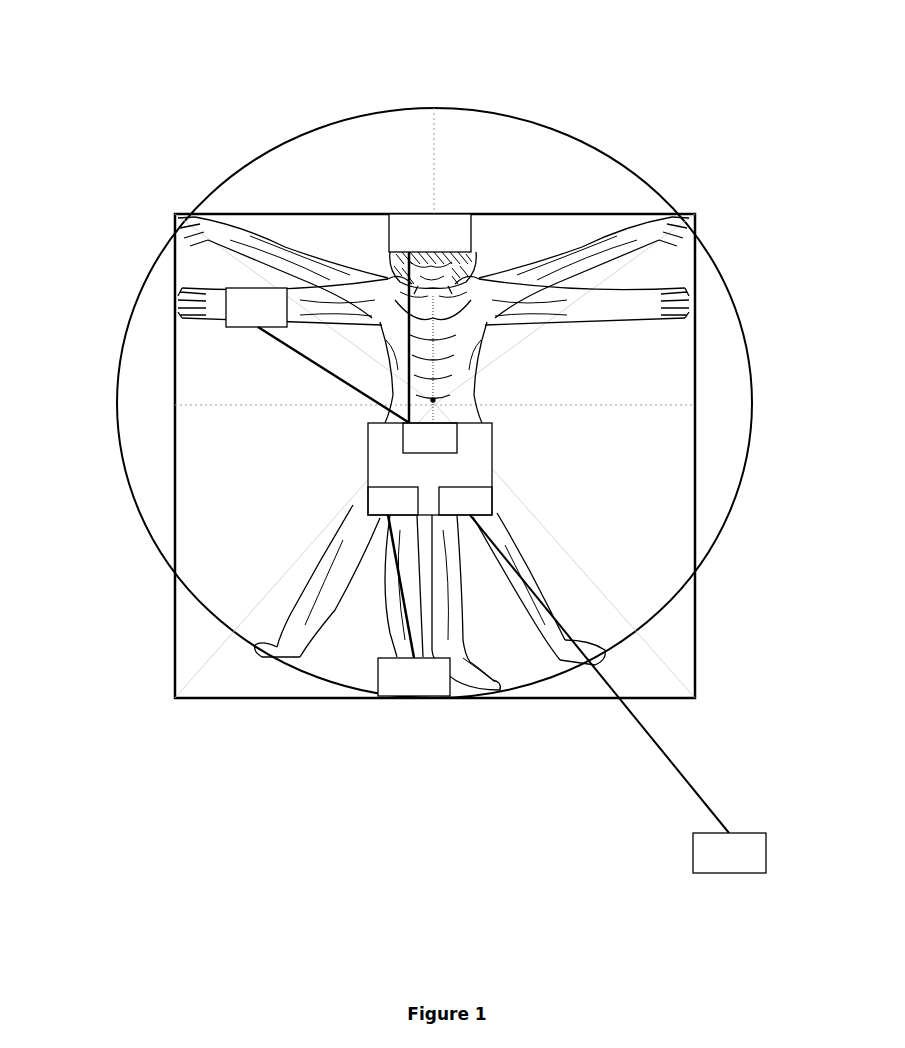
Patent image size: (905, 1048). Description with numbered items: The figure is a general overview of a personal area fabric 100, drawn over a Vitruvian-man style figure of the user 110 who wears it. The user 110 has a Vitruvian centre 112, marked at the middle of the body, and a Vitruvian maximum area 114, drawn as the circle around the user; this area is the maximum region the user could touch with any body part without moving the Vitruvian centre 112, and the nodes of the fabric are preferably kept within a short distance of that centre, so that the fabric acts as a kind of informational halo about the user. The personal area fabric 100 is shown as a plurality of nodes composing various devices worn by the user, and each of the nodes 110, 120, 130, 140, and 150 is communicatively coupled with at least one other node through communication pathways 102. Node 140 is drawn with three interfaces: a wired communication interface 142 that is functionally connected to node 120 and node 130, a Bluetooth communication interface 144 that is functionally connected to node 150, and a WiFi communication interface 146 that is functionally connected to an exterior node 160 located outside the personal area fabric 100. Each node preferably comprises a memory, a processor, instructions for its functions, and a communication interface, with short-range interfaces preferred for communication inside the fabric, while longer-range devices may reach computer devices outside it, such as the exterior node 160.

The personal area fabric 100 is at (112, 88).
The communication pathways 102 is at (313, 367).
The user 110 is at (676, 215).
The Vitruvian centre 112 is at (436, 399).
The Vitruvian maximum area 114 is at (443, 106).
The node 120 is at (317, 355).
The node 130 is at (430, 318).
The node 140 is at (430, 469).
The wired communication interface 142 is at (430, 438).
The Bluetooth communication interface 144 is at (393, 501).
The WiFi communication interface 146 is at (465, 501).
The node 150 is at (414, 605).
The exterior node 160 is at (618, 694).